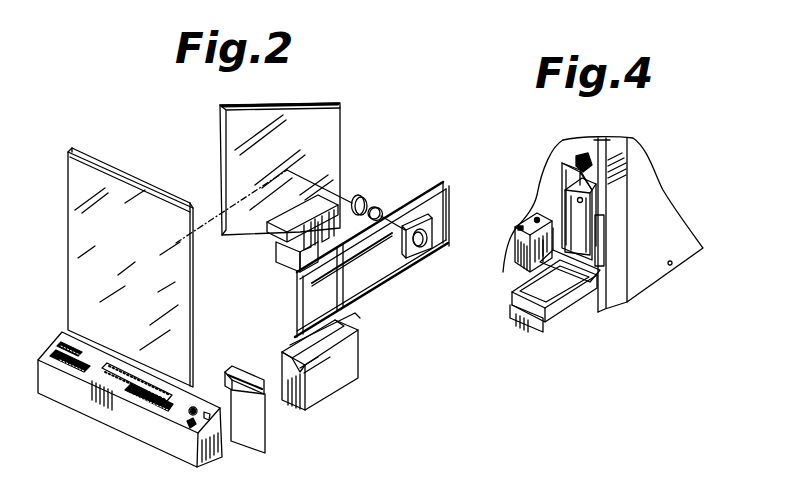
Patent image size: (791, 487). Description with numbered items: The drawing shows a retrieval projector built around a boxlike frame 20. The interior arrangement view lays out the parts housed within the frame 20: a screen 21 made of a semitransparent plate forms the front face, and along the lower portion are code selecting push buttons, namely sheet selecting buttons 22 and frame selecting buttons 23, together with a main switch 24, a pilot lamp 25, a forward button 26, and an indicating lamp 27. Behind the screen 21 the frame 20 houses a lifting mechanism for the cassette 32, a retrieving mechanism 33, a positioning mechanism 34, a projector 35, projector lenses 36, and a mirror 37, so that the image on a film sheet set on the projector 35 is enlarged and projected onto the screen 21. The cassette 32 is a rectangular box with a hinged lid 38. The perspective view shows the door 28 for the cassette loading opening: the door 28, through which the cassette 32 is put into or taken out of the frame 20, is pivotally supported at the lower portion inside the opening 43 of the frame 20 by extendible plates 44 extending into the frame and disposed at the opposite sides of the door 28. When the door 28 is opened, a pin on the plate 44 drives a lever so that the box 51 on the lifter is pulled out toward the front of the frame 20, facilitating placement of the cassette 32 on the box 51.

In FIG. 4, the frame 20 is at (652, 169).
In FIG. 2, the screen 21 is at (70, 258).
In FIG. 2, the sheet selecting buttons 22 is at (70, 371).
In FIG. 2, the frame selecting buttons 23 is at (137, 393).
In FIG. 2, the main switch 24 is at (196, 408).
In FIG. 2, the pilot lamp 25 is at (191, 432).
In FIG. 2, the forward button 26 is at (214, 430).
In FIG. 4, the indicating lamp 27 is at (580, 155).
In FIG. 2, the door 28 is at (258, 437).
In FIG. 4, the door 28 is at (563, 309).
In FIG. 2, the cassette 32 is at (316, 392).
In FIG. 4, the cassette 32 is at (581, 213).
In FIG. 2, the retrieving mechanism 33 is at (282, 258).
In FIG. 2, the positioning mechanism 34 is at (398, 281).
In FIG. 2, the projector 35 is at (418, 217).
In FIG. 2, the projector lenses 36 is at (376, 201).
In FIG. 2, the mirror 37 is at (340, 128).
In FIG. 4, the hinged lid 38 is at (597, 146).
In FIG. 4, the opening 43 is at (560, 176).
In FIG. 4, the extendible plates 44 is at (522, 275).
In FIG. 4, the box 51 is at (560, 207).